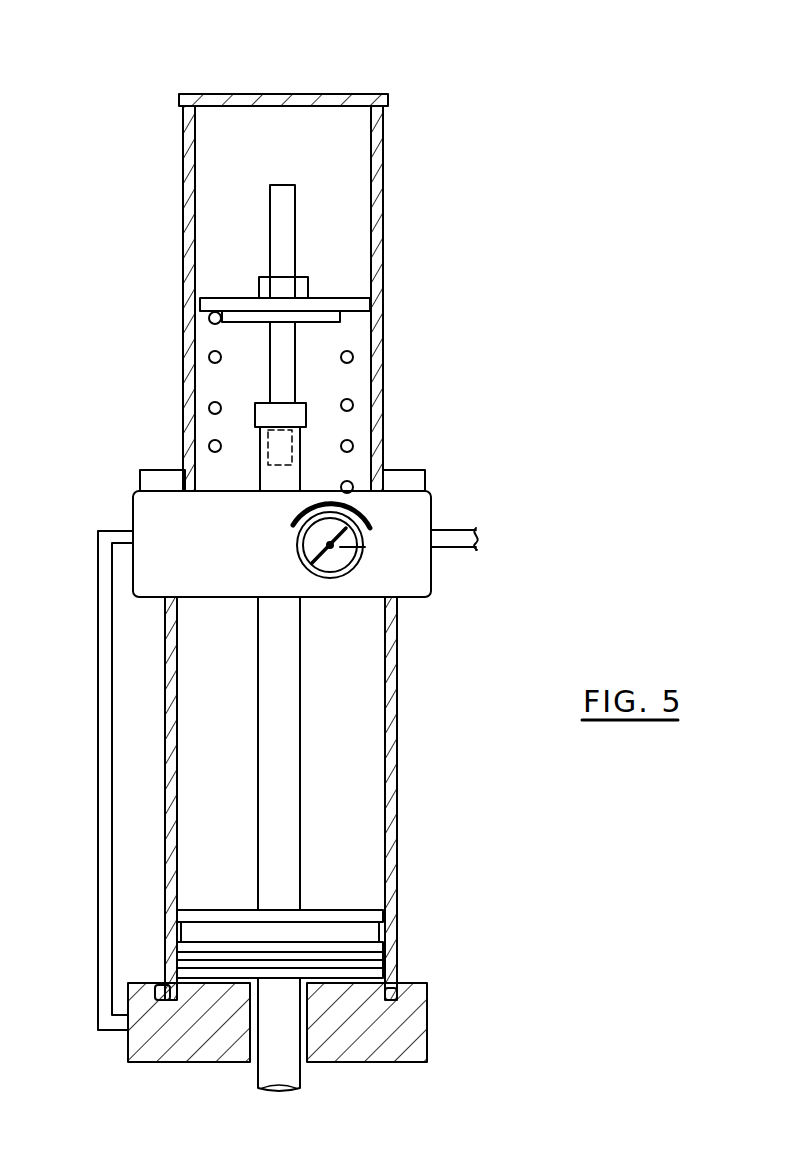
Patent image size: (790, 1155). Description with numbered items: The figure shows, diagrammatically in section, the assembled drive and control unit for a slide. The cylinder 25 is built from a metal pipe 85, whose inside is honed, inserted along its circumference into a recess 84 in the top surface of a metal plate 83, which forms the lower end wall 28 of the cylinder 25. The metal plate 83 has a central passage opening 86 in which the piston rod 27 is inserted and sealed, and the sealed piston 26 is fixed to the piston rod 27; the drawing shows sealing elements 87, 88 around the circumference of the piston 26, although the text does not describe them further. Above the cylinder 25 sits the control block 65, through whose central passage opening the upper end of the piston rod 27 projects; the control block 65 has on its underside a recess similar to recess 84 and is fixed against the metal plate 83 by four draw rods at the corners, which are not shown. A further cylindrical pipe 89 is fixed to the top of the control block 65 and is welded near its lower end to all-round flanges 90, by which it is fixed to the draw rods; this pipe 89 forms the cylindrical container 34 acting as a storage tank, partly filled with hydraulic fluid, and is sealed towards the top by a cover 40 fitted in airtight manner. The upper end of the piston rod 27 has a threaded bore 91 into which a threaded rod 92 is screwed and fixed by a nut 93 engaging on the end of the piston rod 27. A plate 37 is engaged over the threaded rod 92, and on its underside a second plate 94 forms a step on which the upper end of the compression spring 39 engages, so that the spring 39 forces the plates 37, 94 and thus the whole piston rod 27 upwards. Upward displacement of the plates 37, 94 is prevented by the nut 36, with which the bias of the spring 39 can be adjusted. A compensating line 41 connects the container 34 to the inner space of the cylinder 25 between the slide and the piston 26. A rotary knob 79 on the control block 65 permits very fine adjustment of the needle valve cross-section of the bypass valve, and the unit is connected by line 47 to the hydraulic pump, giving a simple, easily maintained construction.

The cylinder 25 is at (451, 736).
The piston 26 is at (208, 866).
The piston rod 27 is at (283, 651).
The lower end wall 28 is at (476, 1057).
The cylindrical container 34 is at (441, 220).
The nut 36 is at (302, 290).
The plate 37 is at (350, 302).
The compression spring 39 is at (353, 405).
The cover 40 is at (293, 99).
The compensating line 41 is at (103, 628).
The line 47 is at (453, 540).
The control block 65 is at (414, 578).
The rotary knob 79 is at (365, 547).
The metal plate 83 is at (418, 1013).
The recess 84 is at (185, 990).
The metal pipe 85 is at (309, 798).
The central passage opening 86 is at (253, 1065).
The piston ring 87 is at (368, 934).
The seal ring 88 is at (372, 957).
The cylindrical pipe 89 is at (193, 330).
The all-round flanges 90 is at (401, 486).
The bore 91 is at (278, 447).
The threaded rod 92 is at (285, 192).
The nut 93 is at (262, 412).
The second plate 94 is at (318, 320).